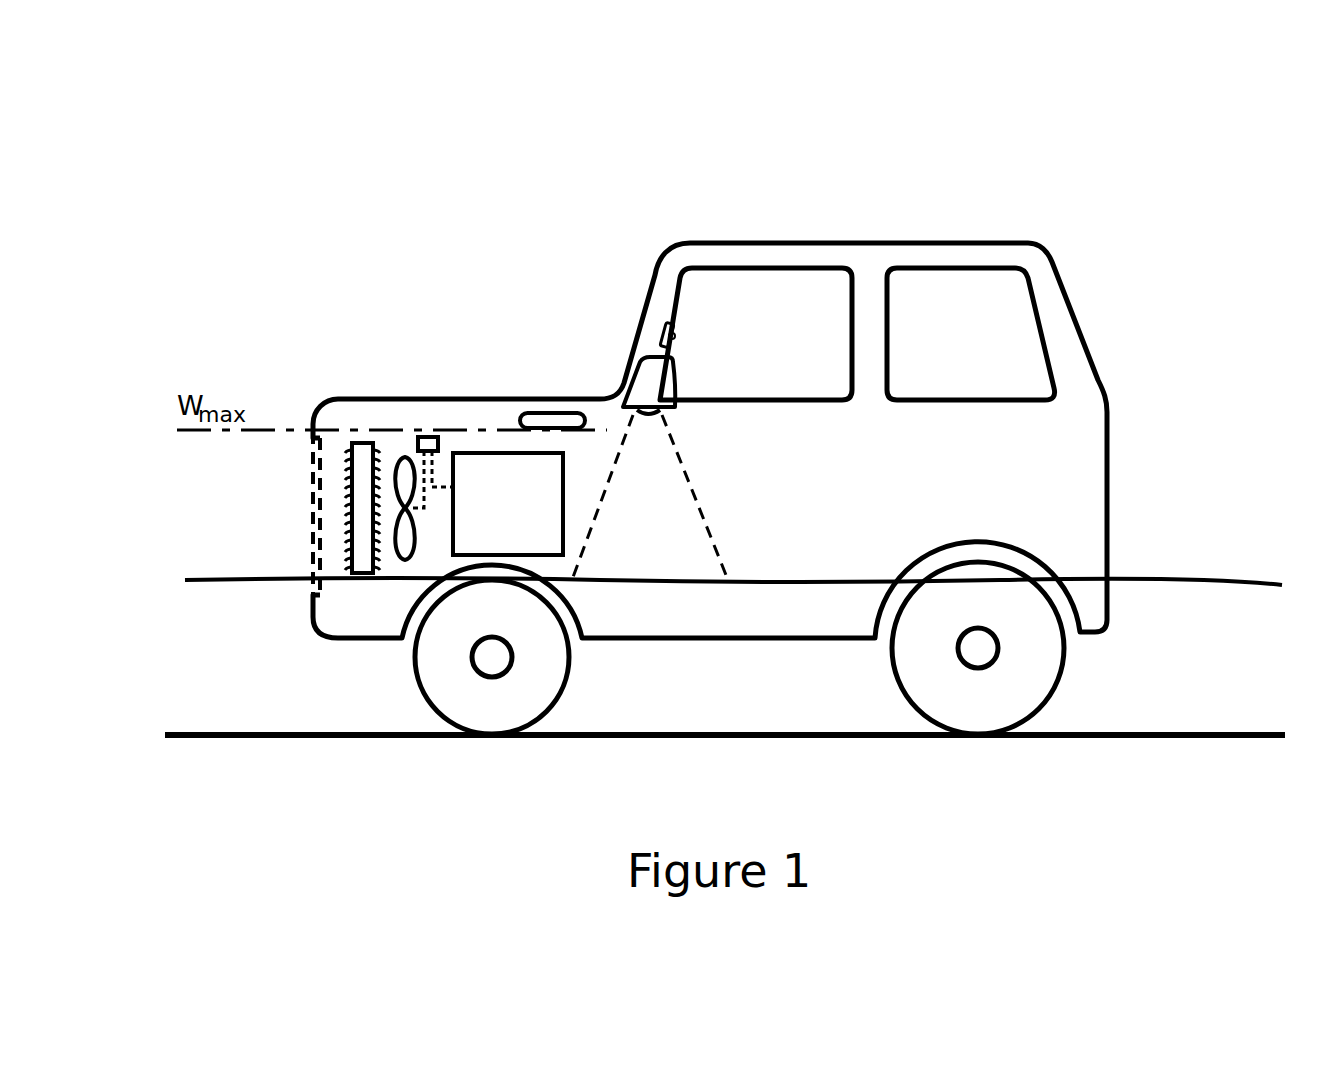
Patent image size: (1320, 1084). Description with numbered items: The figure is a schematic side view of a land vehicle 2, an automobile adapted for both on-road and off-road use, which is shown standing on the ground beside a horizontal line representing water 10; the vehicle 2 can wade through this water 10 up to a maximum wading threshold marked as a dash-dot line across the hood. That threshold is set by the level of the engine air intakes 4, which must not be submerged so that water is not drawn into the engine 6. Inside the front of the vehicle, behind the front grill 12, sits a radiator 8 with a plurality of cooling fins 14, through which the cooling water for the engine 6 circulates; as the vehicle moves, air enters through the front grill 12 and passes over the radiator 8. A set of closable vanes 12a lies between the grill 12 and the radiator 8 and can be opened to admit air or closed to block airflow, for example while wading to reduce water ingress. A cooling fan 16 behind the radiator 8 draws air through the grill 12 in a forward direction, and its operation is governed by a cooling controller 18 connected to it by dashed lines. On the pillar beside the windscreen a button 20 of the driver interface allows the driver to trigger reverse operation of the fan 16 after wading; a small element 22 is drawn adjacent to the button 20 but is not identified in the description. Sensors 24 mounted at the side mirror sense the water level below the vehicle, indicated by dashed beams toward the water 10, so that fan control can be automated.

The land vehicle 2 is at (1086, 198).
The engine air intakes 4 is at (543, 413).
The engine 6 is at (490, 485).
The radiator 8 is at (360, 448).
The water 10 is at (1167, 627).
The front grill 12 is at (313, 495).
The closable vanes 12a is at (320, 480).
The cooling fins 14 is at (347, 522).
The cooling fan 16 is at (405, 545).
The cooling controller 18 is at (423, 437).
The button 20 is at (673, 337).
The camera lens 22 is at (660, 337).
The sensors 24 is at (648, 415).